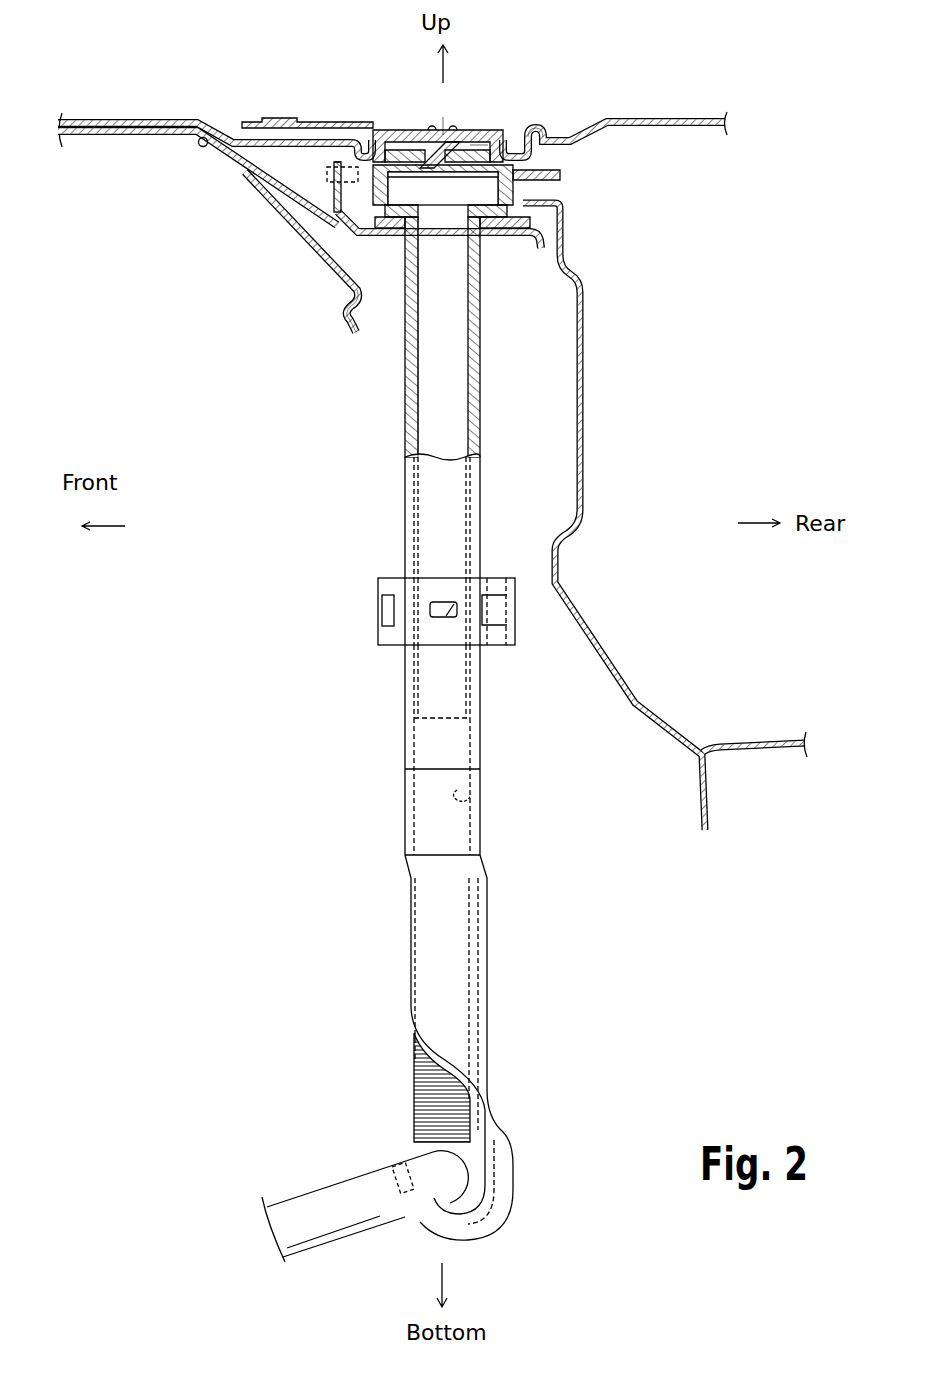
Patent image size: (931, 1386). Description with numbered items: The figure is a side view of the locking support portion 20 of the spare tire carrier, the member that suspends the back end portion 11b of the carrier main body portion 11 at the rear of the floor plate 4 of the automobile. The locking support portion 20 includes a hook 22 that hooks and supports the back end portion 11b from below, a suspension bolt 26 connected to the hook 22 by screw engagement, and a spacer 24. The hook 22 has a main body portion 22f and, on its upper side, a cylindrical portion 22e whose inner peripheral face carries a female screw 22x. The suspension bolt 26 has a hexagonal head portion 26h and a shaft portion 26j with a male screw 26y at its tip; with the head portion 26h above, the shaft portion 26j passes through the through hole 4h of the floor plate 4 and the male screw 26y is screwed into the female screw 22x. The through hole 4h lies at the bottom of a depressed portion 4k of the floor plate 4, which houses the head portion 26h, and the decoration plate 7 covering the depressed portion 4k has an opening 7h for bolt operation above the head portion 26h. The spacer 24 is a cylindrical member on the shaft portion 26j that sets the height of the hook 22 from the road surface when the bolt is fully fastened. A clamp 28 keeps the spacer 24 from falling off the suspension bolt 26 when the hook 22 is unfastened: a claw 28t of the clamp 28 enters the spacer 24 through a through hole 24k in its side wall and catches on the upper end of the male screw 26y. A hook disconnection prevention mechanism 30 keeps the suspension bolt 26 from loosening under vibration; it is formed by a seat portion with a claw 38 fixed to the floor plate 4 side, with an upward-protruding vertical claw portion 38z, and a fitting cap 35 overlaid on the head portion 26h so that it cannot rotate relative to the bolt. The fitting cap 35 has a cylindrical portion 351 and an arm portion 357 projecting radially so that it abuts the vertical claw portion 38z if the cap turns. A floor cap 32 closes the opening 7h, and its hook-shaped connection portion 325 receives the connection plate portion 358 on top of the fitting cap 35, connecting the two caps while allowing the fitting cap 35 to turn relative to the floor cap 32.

The decoration plate 7 is at (204, 112).
The floor plate 4 is at (123, 151).
The depressed portion 4k is at (203, 148).
The through hole 4h is at (352, 273).
The seat portion with a claw 38 is at (303, 207).
The vertical claw portion 38z is at (316, 202).
The cylindrical portion 351 is at (412, 232).
The arm portion 357 is at (348, 150).
The hook-shaped connection portion 325 is at (400, 155).
The floor cap 32 is at (417, 116).
The hook disconnection prevention mechanism 30 is at (457, 106).
The connection plate portion 358 is at (471, 147).
The opening for bolt operation 7h is at (521, 138).
The fitting cap 35 is at (532, 192).
The head portion 26h is at (453, 188).
The suspension bolt 26 is at (427, 392).
The shaft portion 26j is at (442, 437).
The spacer 24 is at (447, 512).
The through hole 24k is at (456, 598).
The claw 28t is at (437, 610).
The locking support portion 20 is at (283, 647).
The clamp 28 is at (392, 640).
The male screw 26y is at (472, 743).
The female screw 22x is at (470, 797).
The cylindrical portion 22e is at (432, 813).
The hook 22 is at (495, 980).
The main body portion 11 is at (318, 1198).
The back end portion 11b is at (443, 1175).
The main body portion 22f is at (475, 1217).